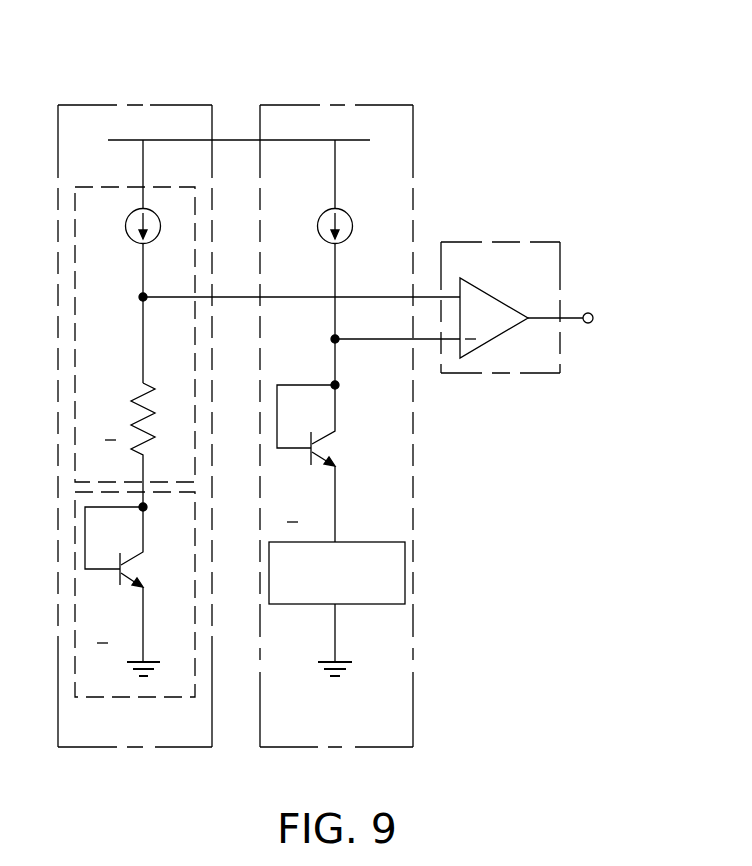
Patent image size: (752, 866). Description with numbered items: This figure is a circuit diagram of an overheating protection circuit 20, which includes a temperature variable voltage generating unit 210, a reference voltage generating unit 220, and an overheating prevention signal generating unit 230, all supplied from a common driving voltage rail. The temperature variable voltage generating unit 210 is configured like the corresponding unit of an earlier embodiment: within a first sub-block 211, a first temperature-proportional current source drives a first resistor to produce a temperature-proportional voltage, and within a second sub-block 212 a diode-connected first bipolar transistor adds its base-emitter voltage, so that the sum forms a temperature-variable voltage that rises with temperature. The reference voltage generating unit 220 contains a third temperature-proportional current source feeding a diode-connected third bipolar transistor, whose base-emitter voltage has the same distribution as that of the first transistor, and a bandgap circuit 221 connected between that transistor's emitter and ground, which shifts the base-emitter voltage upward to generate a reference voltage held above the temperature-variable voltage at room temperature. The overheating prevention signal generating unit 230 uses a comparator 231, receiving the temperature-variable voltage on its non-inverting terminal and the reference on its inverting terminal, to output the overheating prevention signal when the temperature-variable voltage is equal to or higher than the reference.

The overheating protection circuit 20 is at (272, 32).
The temperature variable voltage generating unit 210 is at (150, 105).
The current source and resistor unit 211 is at (130, 187).
The transistor unit 212 is at (130, 697).
The reference voltage generating unit 220 is at (352, 105).
The bandgap circuit 221 is at (368, 542).
The overheating prevention signal generating unit 230 is at (495, 242).
The comparator 231 is at (498, 296).